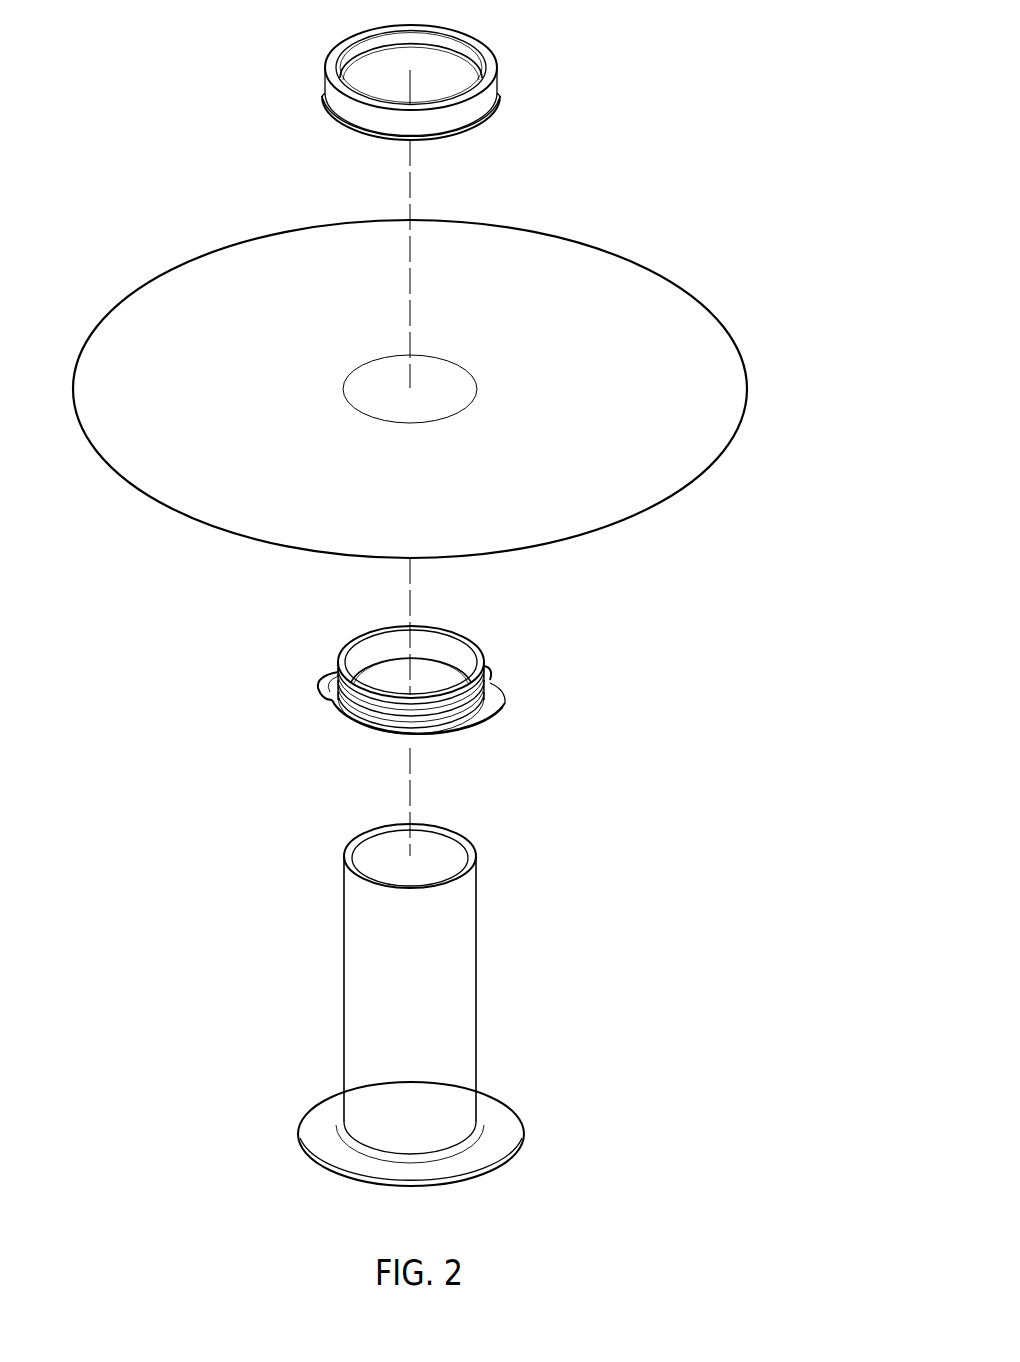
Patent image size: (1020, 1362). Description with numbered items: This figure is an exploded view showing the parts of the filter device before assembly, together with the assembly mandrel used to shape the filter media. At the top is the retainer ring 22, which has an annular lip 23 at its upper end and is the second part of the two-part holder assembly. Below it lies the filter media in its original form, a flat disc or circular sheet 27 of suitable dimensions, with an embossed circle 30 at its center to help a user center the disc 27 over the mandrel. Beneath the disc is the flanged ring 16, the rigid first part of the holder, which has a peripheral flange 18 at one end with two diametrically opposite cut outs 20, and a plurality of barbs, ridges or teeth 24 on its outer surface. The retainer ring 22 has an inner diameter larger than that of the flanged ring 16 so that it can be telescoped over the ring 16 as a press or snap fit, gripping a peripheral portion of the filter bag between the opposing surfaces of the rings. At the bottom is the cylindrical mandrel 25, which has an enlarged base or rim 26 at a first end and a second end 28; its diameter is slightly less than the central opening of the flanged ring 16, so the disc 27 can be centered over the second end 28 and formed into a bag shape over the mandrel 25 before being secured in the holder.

The flanged ring 16 is at (422, 692).
The peripheral flange 18 is at (472, 727).
The cut outs 20 is at (490, 684).
The retainer ring 22 is at (498, 36).
The annular lip 23 is at (480, 130).
The barbs, ridges or teeth 24 is at (387, 703).
The cylindrical mandrel 25 is at (466, 988).
The enlarged base or rim 26 is at (500, 1118).
The flat disc or circular sheet 27 is at (587, 273).
The second end 28 is at (435, 853).
The embossed circle 30 is at (478, 389).